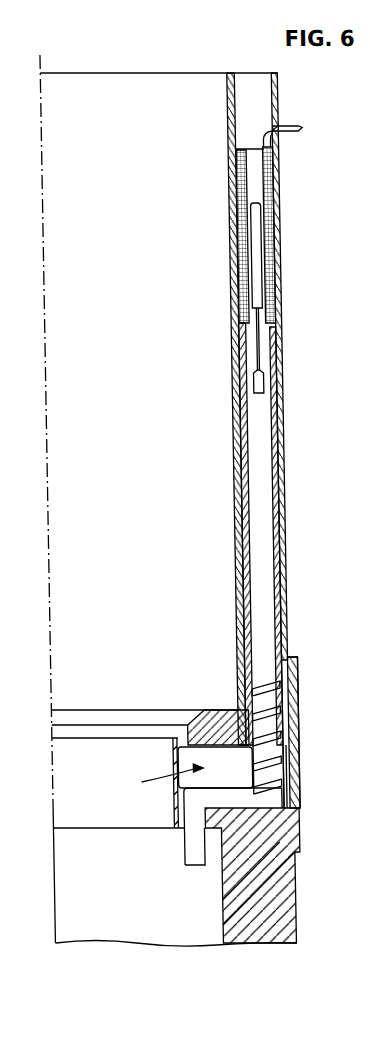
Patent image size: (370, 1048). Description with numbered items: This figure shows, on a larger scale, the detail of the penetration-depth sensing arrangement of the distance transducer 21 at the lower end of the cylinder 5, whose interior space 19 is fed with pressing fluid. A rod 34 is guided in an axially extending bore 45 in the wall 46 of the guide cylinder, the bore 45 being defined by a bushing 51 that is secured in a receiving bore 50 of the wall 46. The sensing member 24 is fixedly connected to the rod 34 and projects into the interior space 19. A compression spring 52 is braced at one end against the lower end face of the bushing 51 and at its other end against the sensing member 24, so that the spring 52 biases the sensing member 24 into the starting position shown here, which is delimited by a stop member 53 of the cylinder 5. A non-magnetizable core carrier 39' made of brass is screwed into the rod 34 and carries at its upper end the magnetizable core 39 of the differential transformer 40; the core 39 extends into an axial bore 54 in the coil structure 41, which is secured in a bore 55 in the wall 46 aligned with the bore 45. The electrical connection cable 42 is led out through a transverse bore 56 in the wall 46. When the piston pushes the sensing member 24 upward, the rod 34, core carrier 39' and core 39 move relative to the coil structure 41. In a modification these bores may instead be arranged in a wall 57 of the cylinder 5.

The cylinder 5 is at (281, 872).
The interior space 19 is at (112, 940).
The distance transducer 21 is at (152, 769).
The sensing member 24 is at (170, 845).
The rod 34 is at (260, 532).
The magnetizable core 39 is at (218, 286).
The core carrier 39' is at (218, 366).
The differential transformer 40 is at (271, 196).
The coil structure 41 is at (232, 180).
The electrical connection cable 42 is at (292, 133).
The bore 45 is at (244, 494).
The wall 46 is at (278, 690).
The receiving bore 50 is at (244, 423).
The bushing 51 is at (238, 462).
The compression spring 52 is at (252, 712).
The stop member 53 is at (256, 806).
The axial bore 54 is at (248, 148).
The bore 55 is at (242, 73).
The transverse bore 56 is at (276, 126).
The wall 57 is at (264, 914).